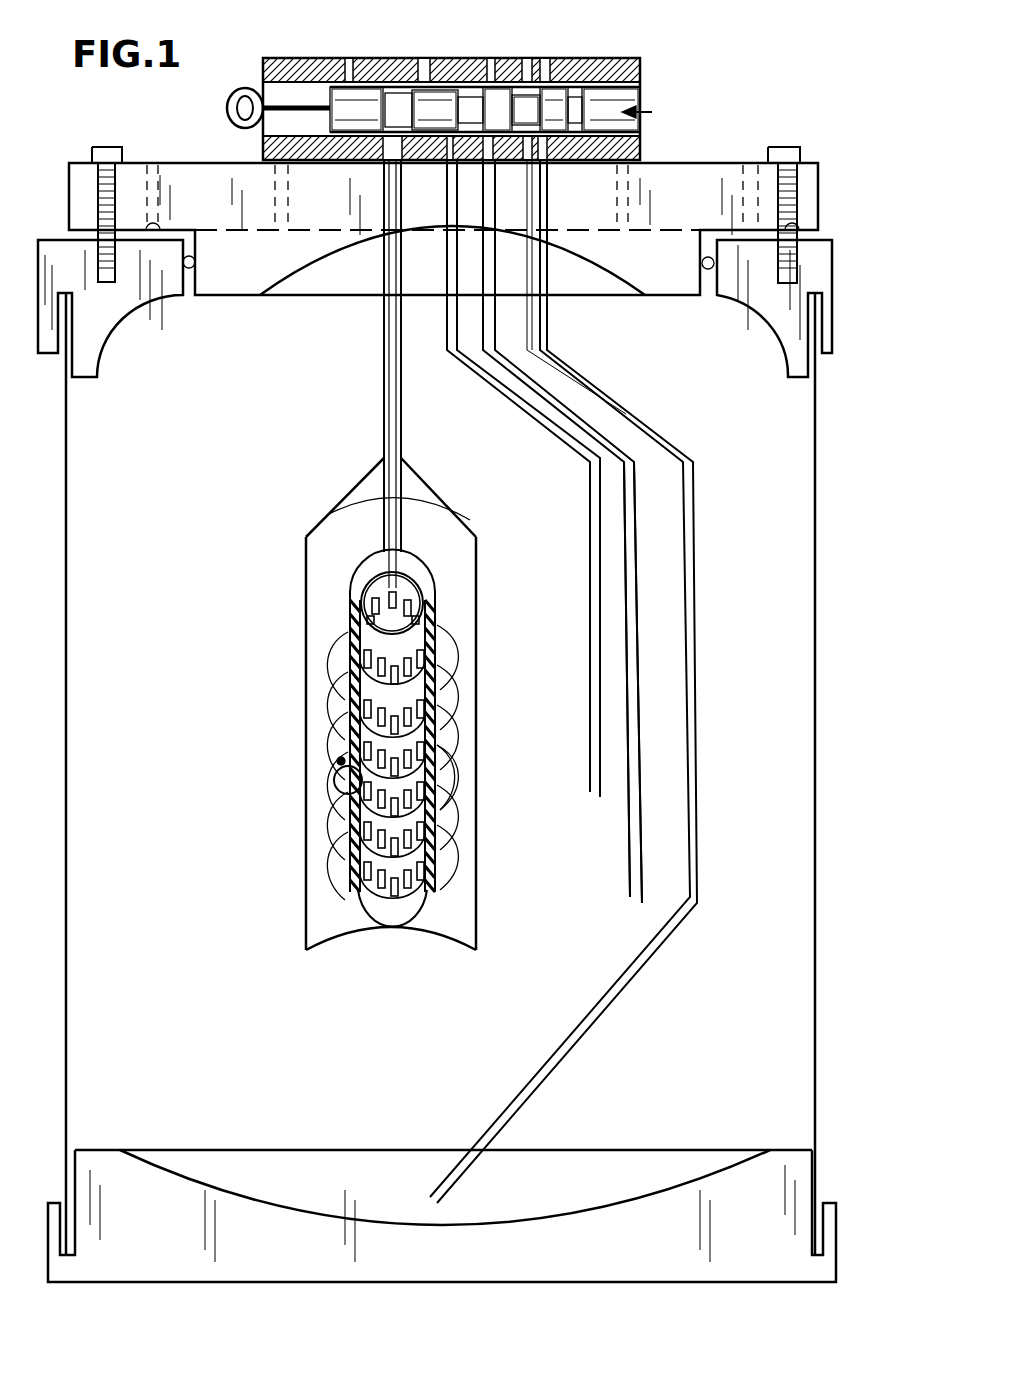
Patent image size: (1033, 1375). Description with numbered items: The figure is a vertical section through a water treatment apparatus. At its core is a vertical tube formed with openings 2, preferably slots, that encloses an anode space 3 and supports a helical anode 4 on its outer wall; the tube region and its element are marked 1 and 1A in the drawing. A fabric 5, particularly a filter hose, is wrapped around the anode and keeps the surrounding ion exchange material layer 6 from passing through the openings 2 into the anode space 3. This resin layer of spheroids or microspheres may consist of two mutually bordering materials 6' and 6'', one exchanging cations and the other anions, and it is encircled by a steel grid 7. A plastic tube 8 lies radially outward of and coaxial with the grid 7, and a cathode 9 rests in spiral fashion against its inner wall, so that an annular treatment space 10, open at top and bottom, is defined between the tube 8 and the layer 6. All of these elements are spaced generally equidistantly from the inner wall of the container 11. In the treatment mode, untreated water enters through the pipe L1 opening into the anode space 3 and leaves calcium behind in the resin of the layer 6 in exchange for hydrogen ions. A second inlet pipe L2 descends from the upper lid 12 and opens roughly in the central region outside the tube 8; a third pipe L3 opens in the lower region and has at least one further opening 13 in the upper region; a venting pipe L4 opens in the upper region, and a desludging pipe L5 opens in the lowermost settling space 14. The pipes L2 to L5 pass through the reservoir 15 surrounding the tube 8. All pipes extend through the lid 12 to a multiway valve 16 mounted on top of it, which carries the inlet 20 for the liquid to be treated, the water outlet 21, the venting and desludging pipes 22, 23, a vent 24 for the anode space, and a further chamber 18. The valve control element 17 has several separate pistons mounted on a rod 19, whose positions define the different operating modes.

The fuel element cladding 1 is at (348, 660).
The fuel rod section 1A is at (343, 786).
The openings 2 is at (407, 595).
The anode space 3 is at (372, 585).
The helical anode 4 is at (355, 700).
The fabric 5 is at (352, 810).
The ion exchange material layer 6 is at (292, 740).
The ion exchange material 6' is at (483, 769).
The ion exchange material 6'' is at (294, 750).
The steel grid 7 is at (348, 850).
The plastic tube 8 is at (320, 918).
The cathode 9 is at (482, 692).
The annular treatment space 10 is at (460, 913).
The container 11 is at (68, 1022).
The upper lid 12 is at (722, 180).
The opening 13 is at (640, 598).
The settling space 14 is at (653, 1165).
The reservoir 15 is at (552, 626).
The multiway valve 16 is at (668, 66).
The valve control element 17 is at (660, 112).
The chamber 18 is at (600, 100).
The rod 19 is at (297, 105).
The inlet 20 is at (424, 76).
The water outlet 21 is at (489, 76).
The venting pipe 22 is at (526, 76).
The desludging pipe 23 is at (549, 76).
The vent 24 is at (344, 76).
The pipe L1 is at (384, 195).
The second inlet pipe L2 is at (447, 200).
The third pipe L3 is at (490, 185).
The venting pipe L4 is at (541, 320).
The desludging pipe L5 is at (533, 205).